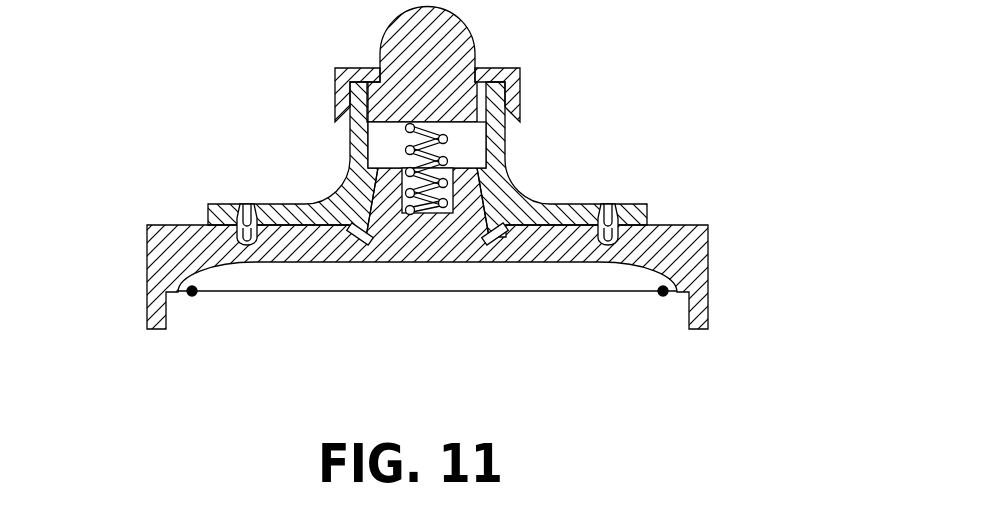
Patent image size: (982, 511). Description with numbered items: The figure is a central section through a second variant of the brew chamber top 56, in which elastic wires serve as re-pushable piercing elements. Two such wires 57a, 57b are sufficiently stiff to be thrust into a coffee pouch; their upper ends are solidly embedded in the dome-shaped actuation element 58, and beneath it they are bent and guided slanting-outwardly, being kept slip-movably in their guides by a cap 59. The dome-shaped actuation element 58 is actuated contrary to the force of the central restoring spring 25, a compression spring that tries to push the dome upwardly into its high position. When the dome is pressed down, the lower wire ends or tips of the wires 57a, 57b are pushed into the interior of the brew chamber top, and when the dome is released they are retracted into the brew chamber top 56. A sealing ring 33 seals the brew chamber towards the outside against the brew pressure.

The brew chamber top 56 is at (157, 262).
The cap 59 is at (297, 204).
The dome-shaped actuation element 58 is at (378, 42).
The compression spring 25 is at (443, 153).
The elastic wire 57a is at (351, 246).
The elastic wire 57b is at (486, 244).
The sealing ring 33 is at (194, 296).